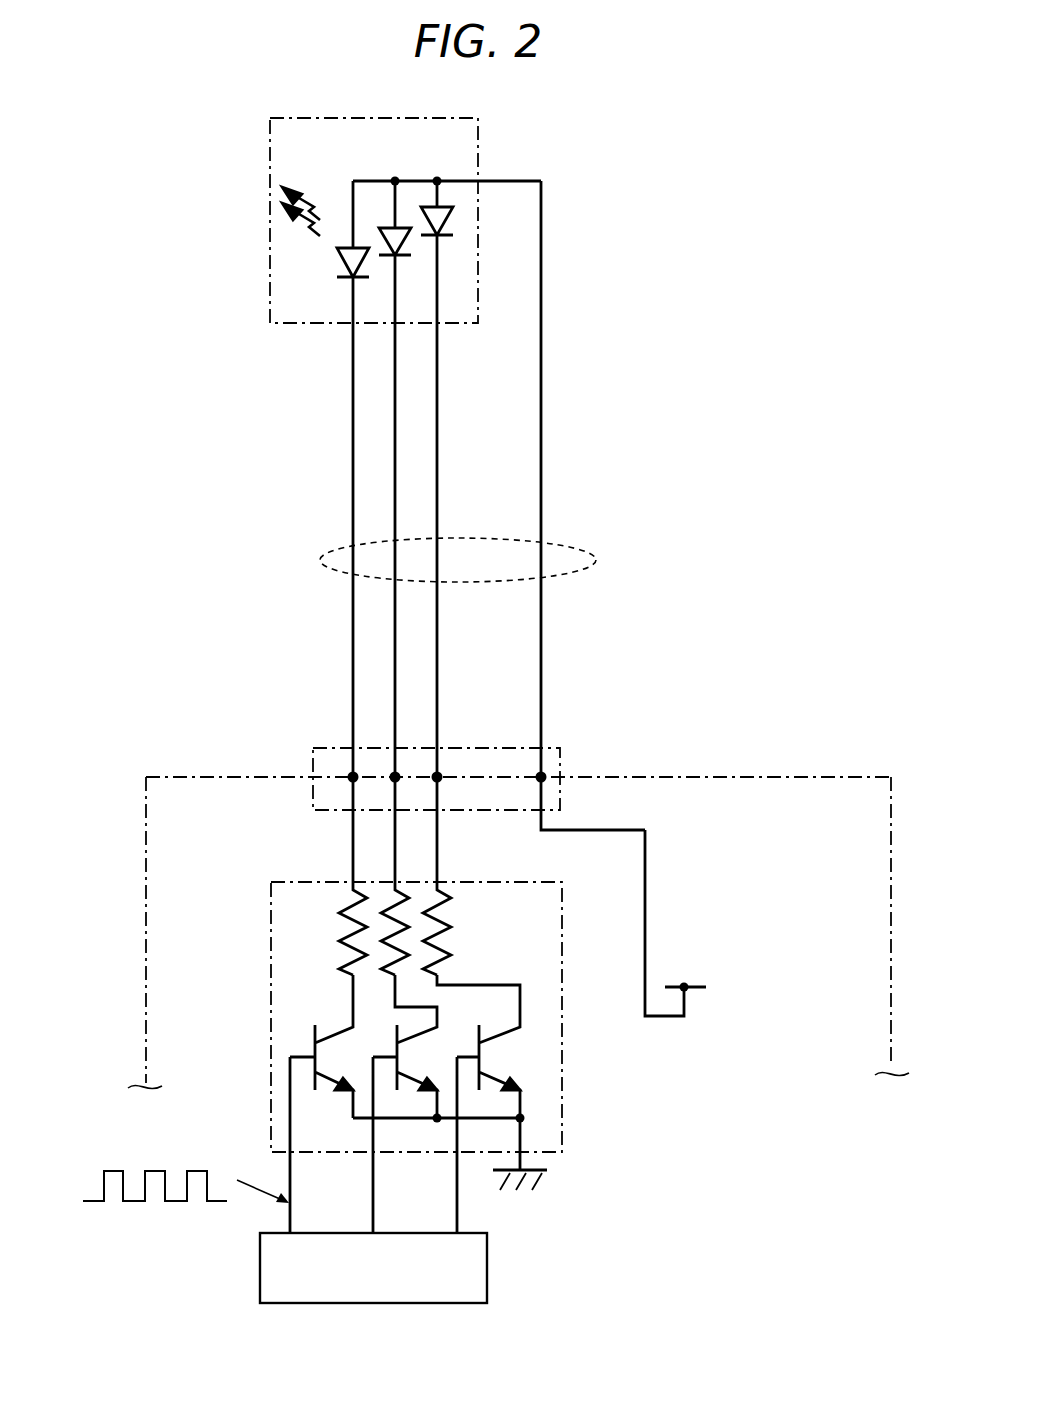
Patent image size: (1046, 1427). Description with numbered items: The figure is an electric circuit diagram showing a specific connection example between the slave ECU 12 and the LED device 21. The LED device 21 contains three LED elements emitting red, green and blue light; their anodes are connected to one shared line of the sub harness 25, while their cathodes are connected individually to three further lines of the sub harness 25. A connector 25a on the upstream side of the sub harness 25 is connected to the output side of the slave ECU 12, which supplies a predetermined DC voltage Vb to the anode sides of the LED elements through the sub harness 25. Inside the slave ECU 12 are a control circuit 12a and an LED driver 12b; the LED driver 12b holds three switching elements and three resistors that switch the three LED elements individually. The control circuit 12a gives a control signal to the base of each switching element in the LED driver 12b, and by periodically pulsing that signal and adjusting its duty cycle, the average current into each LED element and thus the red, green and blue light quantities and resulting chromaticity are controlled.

The LED device 21 is at (270, 258).
The sub harness 25 is at (587, 548).
The connector 25a is at (562, 754).
The slave ECU 12 is at (809, 776).
The control circuit 12a is at (488, 1258).
The LED driver 12b is at (562, 1062).